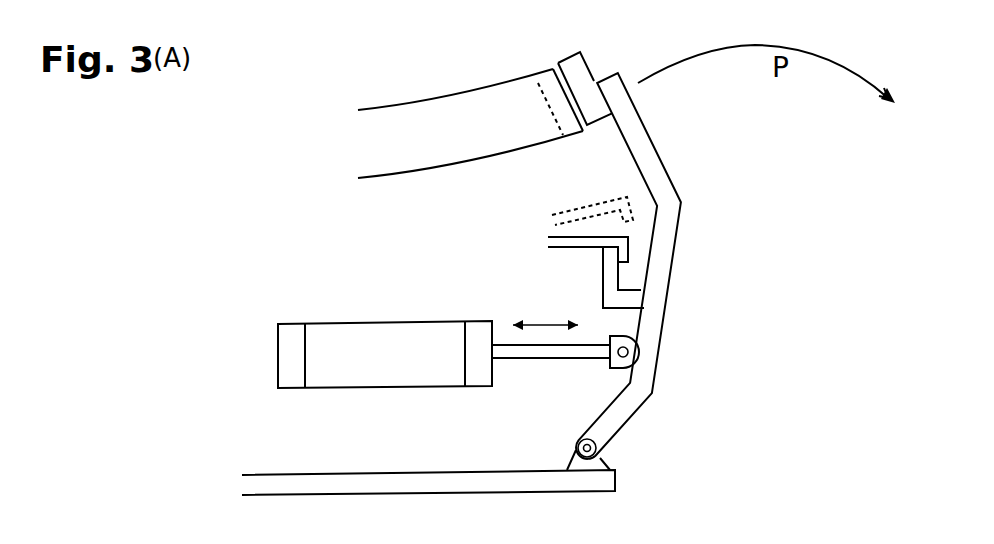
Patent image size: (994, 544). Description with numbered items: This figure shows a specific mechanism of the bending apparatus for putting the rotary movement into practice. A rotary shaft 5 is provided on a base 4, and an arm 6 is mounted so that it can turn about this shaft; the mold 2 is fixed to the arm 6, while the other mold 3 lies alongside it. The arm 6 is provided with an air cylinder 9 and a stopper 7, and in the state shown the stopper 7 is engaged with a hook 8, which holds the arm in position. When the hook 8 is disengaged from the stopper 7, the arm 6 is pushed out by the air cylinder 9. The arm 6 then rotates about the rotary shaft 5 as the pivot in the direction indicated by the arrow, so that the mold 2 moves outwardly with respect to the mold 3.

The second mold 2 is at (580, 73).
The second mold 3 is at (452, 158).
The base 4 is at (415, 475).
The rotary shaft 5 is at (582, 437).
The arm 6 is at (657, 347).
The stopper 7 is at (613, 278).
The hook 8 is at (565, 242).
The air cylinder 9 is at (378, 333).